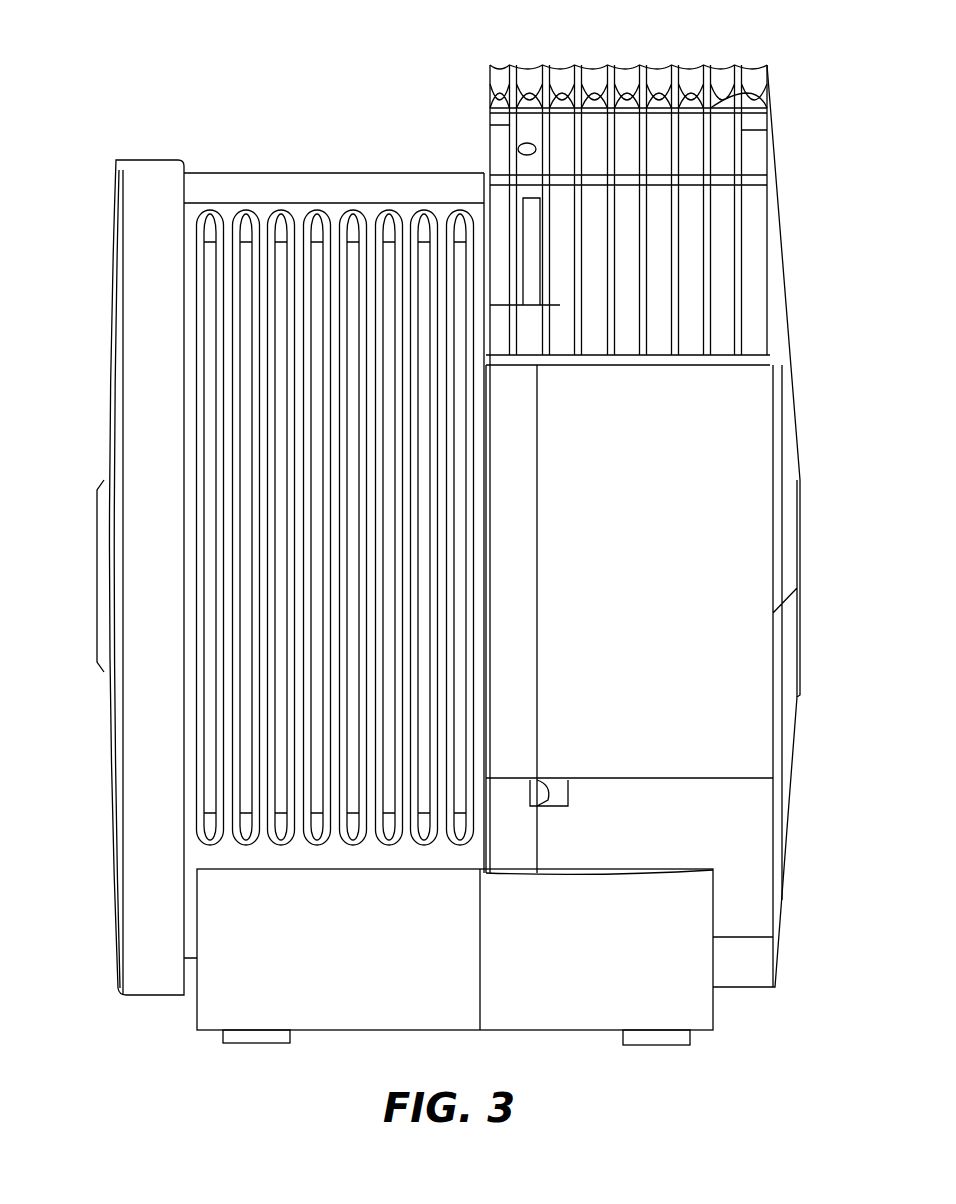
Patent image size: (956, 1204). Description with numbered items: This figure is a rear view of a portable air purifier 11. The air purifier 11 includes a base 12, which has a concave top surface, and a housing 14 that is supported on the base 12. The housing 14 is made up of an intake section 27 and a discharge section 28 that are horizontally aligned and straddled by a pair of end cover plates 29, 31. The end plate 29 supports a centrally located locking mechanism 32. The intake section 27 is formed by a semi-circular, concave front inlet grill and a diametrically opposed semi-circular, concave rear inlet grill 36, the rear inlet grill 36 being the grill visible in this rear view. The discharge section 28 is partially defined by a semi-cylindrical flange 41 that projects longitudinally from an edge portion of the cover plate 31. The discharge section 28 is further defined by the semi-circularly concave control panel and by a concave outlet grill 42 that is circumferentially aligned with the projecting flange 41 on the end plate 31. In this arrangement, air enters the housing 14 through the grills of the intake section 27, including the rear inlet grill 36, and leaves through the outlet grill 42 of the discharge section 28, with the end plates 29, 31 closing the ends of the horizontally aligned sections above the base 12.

The portable air purifier 11 is at (130, 70).
The base 12 is at (548, 995).
The housing 14 is at (455, 140).
The intake section 27 is at (292, 140).
The discharge section 28 is at (717, 44).
The end cover plate 29 is at (115, 266).
The end cover plate 31 is at (790, 792).
The locking mechanism 32 is at (97, 556).
The rear inlet grill 36 is at (213, 776).
The semi-cylindrical flange 41 is at (655, 684).
The outlet grill 42 is at (722, 150).